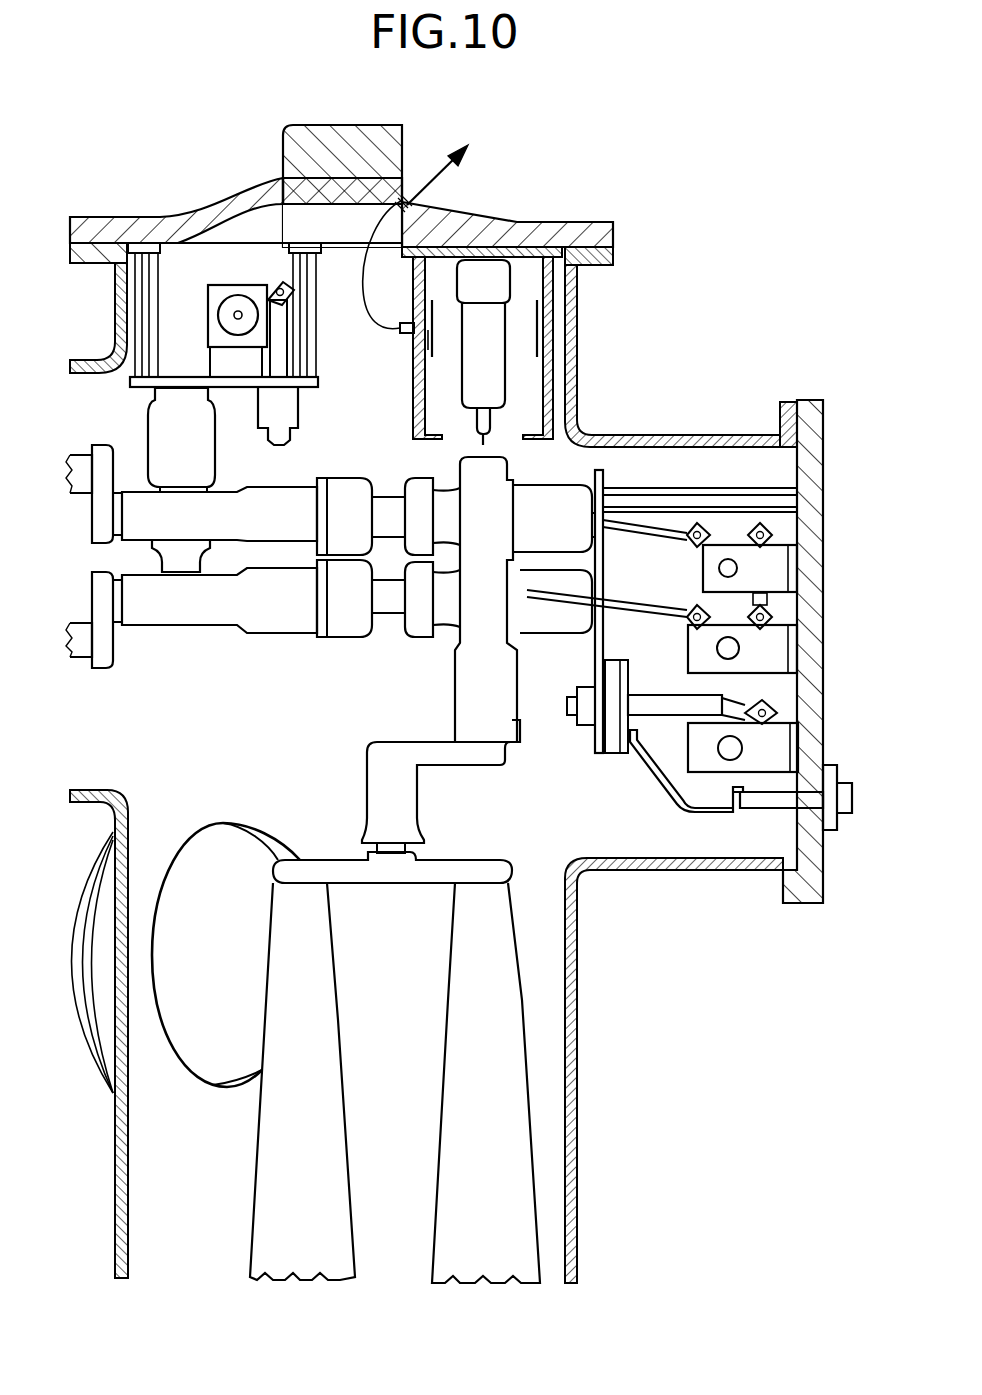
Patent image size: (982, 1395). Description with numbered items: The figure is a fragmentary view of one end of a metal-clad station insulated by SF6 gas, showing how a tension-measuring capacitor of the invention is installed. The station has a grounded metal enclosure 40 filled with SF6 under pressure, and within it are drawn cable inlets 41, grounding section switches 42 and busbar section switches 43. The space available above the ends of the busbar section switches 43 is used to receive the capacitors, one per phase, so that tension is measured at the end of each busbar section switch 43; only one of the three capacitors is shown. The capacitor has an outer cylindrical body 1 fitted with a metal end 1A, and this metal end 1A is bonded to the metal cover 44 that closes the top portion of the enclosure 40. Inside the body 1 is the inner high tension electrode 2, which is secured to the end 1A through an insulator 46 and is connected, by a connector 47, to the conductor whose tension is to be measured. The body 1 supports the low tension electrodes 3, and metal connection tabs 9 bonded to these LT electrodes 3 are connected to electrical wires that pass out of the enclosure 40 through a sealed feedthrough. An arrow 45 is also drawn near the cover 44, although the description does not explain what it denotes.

The outer cylindrical body 1 is at (392, 436).
The metal end 1A is at (517, 247).
The inner electrode 2 is at (492, 377).
The LT electrodes 3 is at (441, 352).
The metal connection tabs 9 is at (398, 340).
The grounded metal enclosure 40 is at (677, 437).
The cable inlets 41 is at (450, 1178).
The grounding section switches 42 is at (628, 610).
The busbar section switches 43 is at (388, 522).
The metal cover 44 is at (470, 222).
The direction arrow 45 is at (414, 200).
The insulator 46 is at (500, 287).
The connector 47 is at (493, 445).